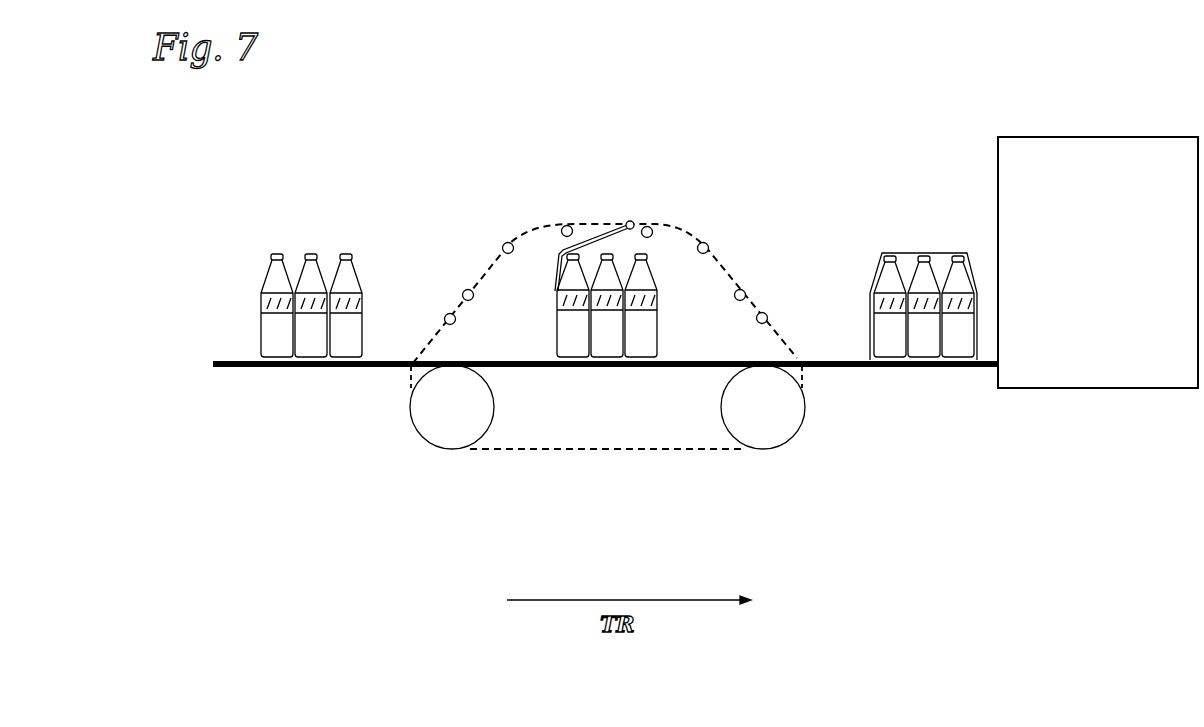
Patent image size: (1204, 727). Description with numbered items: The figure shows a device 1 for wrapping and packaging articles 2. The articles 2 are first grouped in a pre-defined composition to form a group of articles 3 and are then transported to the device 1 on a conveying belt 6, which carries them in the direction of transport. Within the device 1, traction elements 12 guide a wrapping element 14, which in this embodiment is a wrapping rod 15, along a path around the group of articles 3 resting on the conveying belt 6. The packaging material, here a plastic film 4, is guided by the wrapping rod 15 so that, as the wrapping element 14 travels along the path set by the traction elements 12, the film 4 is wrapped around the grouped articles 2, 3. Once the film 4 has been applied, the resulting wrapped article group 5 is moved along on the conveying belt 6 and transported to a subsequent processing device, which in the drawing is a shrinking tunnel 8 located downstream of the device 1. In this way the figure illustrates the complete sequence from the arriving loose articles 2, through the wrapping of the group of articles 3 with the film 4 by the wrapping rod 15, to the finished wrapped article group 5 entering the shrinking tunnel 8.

The device for wrapping and packaging 1 is at (414, 540).
The articles 2 is at (318, 357).
The group of articles 3 is at (305, 338).
The packaging material/film 4 is at (602, 238).
The wrapped article group 5 is at (917, 345).
The conveying belt 6 is at (233, 368).
The shrinking tunnel 8 is at (1092, 272).
The traction elements 12 is at (727, 260).
The wrapping element 14 is at (670, 184).
The wrapping rod 15 is at (630, 222).